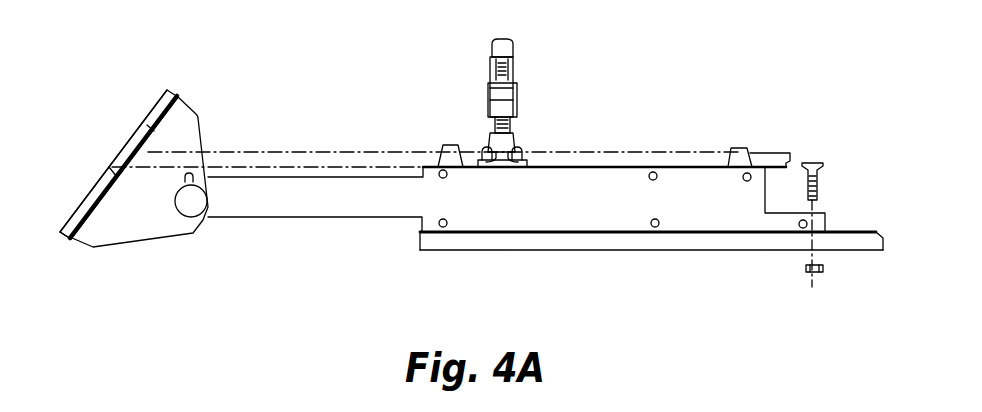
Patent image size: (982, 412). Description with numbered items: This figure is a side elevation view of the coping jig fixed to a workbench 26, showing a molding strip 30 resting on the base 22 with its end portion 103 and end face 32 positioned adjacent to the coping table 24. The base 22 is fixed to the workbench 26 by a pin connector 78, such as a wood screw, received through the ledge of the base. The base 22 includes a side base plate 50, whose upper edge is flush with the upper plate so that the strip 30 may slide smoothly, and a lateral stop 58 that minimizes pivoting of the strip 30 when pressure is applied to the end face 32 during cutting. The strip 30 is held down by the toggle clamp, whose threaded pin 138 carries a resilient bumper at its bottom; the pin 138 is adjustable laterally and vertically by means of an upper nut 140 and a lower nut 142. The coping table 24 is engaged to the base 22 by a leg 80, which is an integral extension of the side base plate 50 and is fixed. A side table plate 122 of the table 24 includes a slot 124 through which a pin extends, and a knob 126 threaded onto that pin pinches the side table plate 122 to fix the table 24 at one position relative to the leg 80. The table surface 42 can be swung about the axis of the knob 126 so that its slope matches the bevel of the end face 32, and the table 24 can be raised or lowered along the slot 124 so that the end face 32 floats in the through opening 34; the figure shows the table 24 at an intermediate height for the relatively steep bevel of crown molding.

The base 22 is at (620, 167).
The table 24 is at (60, 238).
The workbench 26 is at (855, 253).
The molding strip 30 is at (322, 150).
The end face 32 is at (110, 162).
The through opening 34 is at (137, 135).
The table surface 42 is at (88, 187).
The side base plate 50 is at (525, 215).
The lateral stop 58 is at (742, 148).
The pin connector 78 is at (823, 170).
The leg 80 is at (338, 198).
The end portion 103 is at (248, 148).
The side table plate 122 is at (141, 229).
The slot 124 is at (185, 178).
The knob 126 is at (190, 217).
The threaded pin 138 is at (497, 125).
The upper nut 140 is at (492, 75).
The lower nut 142 is at (517, 92).